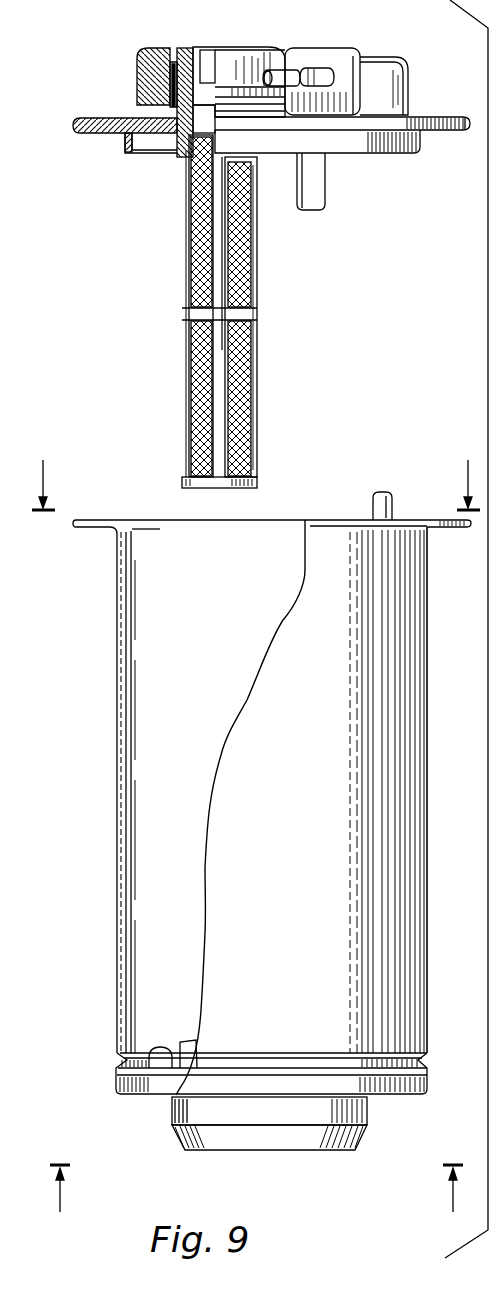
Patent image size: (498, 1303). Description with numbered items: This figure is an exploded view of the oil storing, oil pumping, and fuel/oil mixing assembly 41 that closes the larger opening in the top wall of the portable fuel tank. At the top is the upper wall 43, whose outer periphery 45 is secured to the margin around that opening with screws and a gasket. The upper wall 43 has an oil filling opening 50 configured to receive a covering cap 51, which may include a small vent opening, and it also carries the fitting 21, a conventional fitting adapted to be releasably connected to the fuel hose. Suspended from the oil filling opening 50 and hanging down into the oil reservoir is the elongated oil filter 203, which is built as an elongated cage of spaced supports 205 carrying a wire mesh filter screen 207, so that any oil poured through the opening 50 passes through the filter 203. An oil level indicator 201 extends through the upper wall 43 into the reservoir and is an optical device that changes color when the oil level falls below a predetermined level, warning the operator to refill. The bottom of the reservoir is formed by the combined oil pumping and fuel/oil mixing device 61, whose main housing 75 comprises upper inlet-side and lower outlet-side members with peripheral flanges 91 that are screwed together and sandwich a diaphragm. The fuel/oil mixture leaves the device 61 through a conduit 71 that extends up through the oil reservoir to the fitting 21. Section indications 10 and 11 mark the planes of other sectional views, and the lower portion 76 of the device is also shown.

The section line 10- 10 is at (254, 474).
The section line 11- 11 is at (254, 1204).
The fitting 21 is at (386, 66).
The oil storing, oil pumping, and fuel/oil mixing assembly 41 is at (112, 863).
The upper wall 43 is at (105, 108).
The outer periphery 45 is at (470, 131).
The oil filling opening 50 is at (203, 50).
The covering cap 51 is at (258, 34).
The combined oil pumping and fuel/oil mixing device 61 is at (307, 1152).
The conduit 71 is at (378, 508).
The main housing 75 is at (170, 1130).
The tapered skirt 76 is at (207, 1152).
The peripheral flanges 91 is at (130, 1096).
The oil level indicator 201 is at (312, 195).
The oil filter 203 is at (165, 252).
The spaced supports 205 is at (185, 285).
The wire mesh filter screen 207 is at (225, 380).